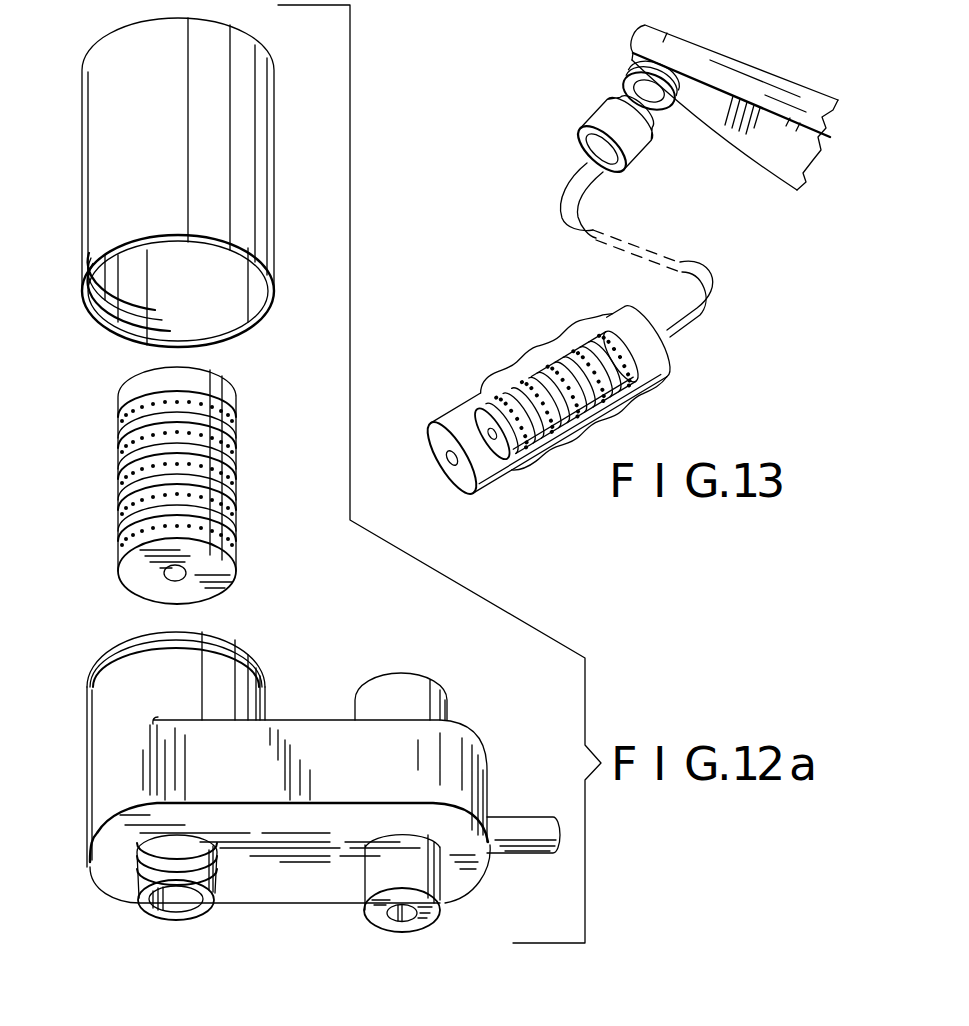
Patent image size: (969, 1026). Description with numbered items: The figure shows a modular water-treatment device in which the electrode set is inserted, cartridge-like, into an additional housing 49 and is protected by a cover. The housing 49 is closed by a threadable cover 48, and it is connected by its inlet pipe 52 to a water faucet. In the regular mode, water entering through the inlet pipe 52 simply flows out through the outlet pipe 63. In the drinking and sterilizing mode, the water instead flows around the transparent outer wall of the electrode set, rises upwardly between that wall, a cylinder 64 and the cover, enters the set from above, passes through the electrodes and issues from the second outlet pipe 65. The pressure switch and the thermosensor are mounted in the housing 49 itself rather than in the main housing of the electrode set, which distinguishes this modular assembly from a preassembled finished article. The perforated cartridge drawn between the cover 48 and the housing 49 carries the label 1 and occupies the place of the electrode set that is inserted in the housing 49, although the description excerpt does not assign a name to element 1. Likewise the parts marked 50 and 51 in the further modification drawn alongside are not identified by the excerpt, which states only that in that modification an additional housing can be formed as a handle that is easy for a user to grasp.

In FIG. 13, the filter cartridge 1 is at (524, 370).
In FIG. 12a, the filter cartridge 1 is at (119, 512).
In FIG. 12a, the threadable cover 48 is at (82, 214).
In FIG. 12a, the housing 49 is at (288, 728).
In FIG. 13, the tubular housing 50 is at (447, 465).
In FIG. 12a, the outlet spigot 51 is at (525, 808).
In FIG. 12a, the inlet pipe 52 is at (460, 708).
In FIG. 12a, the outlet pipe 63 is at (377, 884).
In FIG. 12a, the cylinder 64 is at (116, 703).
In FIG. 12a, the outlet pipe 65 is at (156, 913).